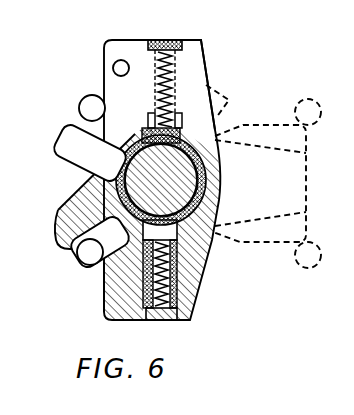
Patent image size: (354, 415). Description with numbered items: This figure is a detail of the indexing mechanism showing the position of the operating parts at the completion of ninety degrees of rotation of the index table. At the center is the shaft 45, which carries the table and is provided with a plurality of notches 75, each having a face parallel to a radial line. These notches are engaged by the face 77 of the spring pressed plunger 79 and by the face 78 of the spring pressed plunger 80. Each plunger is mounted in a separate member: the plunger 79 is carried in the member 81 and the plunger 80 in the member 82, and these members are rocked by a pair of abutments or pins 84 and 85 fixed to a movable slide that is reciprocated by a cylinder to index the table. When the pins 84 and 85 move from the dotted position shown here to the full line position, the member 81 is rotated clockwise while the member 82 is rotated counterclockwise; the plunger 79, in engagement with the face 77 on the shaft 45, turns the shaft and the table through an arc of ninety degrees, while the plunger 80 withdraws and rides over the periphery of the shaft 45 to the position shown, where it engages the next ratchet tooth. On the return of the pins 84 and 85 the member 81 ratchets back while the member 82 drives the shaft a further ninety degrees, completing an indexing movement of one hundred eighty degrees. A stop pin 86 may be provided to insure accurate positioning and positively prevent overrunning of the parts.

The shaft 45 is at (212, 196).
The notches 75 is at (208, 181).
The face 77 is at (210, 243).
The face 78 is at (142, 128).
The spring pressed plunger 79 is at (196, 262).
The spring pressed plunger 80 is at (173, 119).
The member 81 is at (190, 289).
The member 82 is at (187, 74).
The abutment pin 84 is at (86, 258).
The abutment pin 85 is at (84, 105).
The stop pin 86 is at (113, 67).